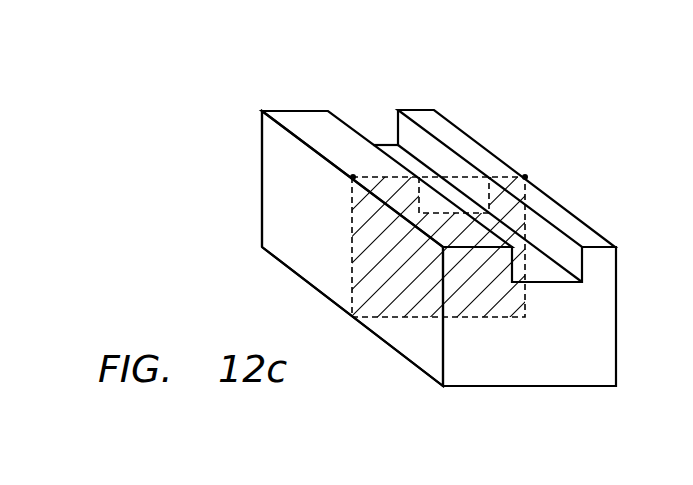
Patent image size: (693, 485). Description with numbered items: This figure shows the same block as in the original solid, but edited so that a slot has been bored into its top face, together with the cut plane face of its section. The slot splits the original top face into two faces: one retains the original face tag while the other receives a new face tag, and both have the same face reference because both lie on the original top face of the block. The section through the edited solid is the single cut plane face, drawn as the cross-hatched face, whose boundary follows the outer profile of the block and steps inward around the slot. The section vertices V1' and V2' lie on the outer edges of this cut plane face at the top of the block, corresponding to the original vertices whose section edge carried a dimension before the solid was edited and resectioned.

The vertex V1' is at (339, 187).
The vertex V2' is at (539, 170).